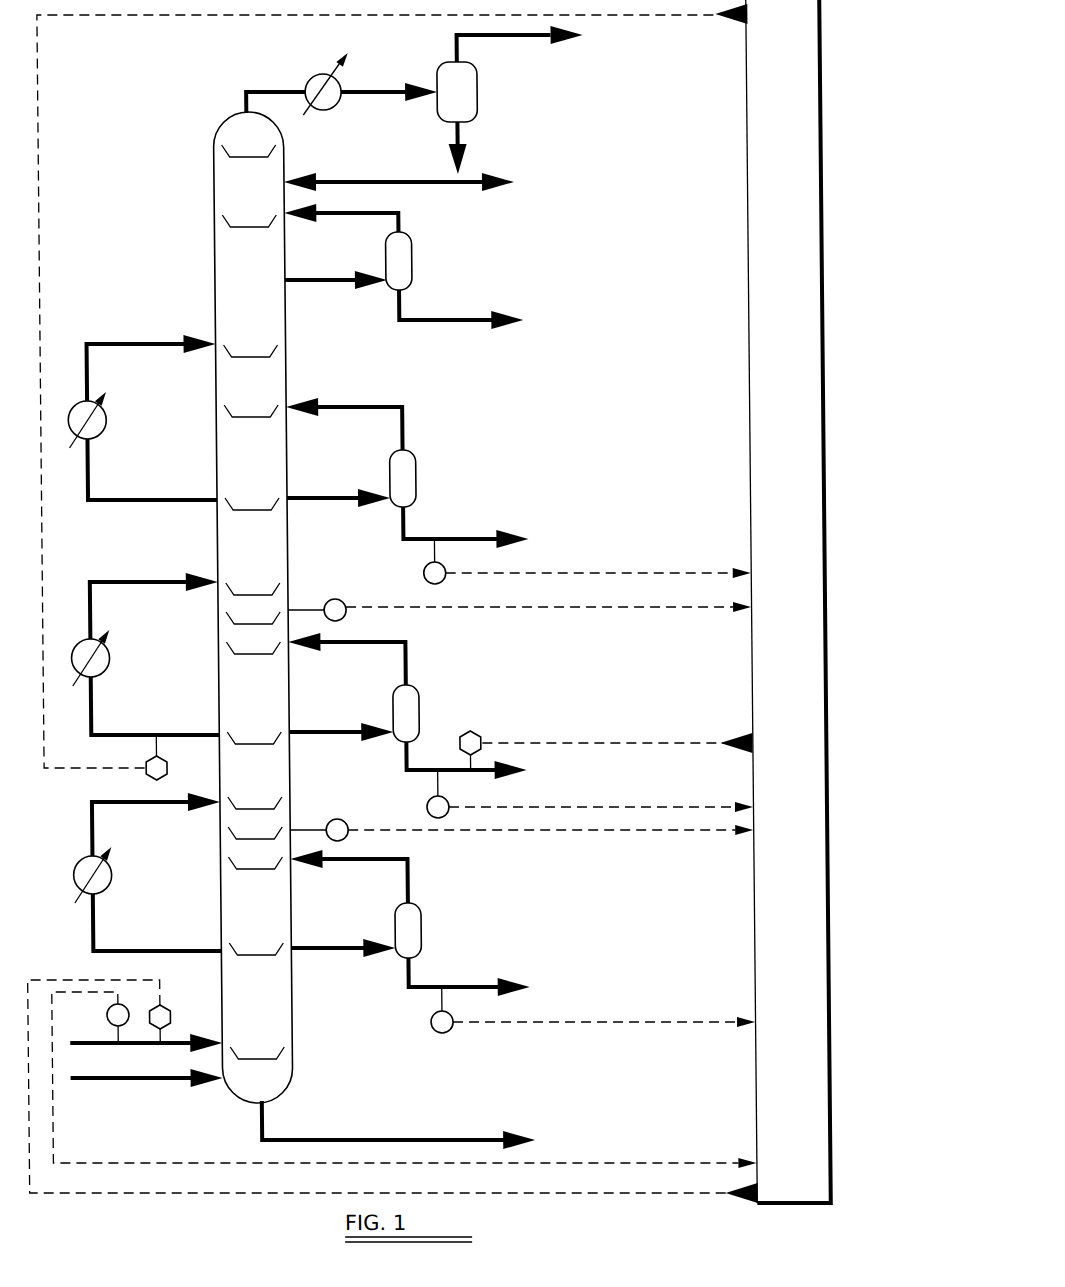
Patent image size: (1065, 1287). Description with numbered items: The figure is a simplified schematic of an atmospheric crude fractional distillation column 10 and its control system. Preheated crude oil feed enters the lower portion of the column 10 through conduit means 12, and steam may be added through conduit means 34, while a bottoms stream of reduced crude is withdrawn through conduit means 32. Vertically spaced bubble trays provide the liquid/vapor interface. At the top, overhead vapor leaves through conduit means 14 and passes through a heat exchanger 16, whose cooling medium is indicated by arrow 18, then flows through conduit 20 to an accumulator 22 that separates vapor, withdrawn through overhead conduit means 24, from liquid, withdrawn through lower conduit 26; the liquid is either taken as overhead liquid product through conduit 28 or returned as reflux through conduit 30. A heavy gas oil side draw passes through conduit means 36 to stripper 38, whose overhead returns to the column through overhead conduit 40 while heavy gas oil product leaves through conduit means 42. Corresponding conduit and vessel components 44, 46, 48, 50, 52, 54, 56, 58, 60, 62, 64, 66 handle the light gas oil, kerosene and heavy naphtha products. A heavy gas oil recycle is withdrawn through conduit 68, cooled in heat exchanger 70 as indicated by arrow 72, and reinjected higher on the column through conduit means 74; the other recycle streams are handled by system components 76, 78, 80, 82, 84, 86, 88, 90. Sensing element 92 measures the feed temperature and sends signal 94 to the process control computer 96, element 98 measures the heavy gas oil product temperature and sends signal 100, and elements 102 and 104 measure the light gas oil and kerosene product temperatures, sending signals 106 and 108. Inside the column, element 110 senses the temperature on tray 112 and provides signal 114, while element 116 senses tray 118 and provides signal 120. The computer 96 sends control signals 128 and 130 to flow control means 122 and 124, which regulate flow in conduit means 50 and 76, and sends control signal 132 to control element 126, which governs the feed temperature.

The fractional distillation column 10 is at (180, 216).
The conduit means 12 is at (174, 1040).
The conduit means 14 is at (251, 90).
The heat exchanger 16 is at (310, 82).
The arrow 18 is at (345, 60).
The conduit 20 is at (378, 90).
The accumulator 22 is at (483, 80).
The overhead conduit means 24 is at (532, 40).
The lower conduit 26 is at (466, 130).
The conduit 28 is at (458, 182).
The conduit 30 is at (338, 182).
The conduit means 32 is at (296, 1140).
The conduit means 34 is at (163, 1081).
The conduit means 36 is at (308, 955).
The stripper 38 is at (420, 912).
The overhead conduit 40 is at (384, 860).
The conduit means 42 is at (462, 987).
The conduit 44 is at (318, 732).
The stripper 46 is at (418, 696).
The overhead conduit 48 is at (412, 640).
The conduit means 50 is at (421, 770).
The conduit 52 is at (303, 497).
The stripper 54 is at (418, 466).
The overhead conduit 56 is at (378, 406).
The conduit means 58 is at (449, 539).
The conduit 60 is at (312, 280).
The stripper 62 is at (416, 266).
The overhead conduit 64 is at (404, 215).
The conduit means 66 is at (473, 320).
The conduit 68 is at (131, 950).
The heat exchanger 70 is at (77, 866).
The arrow 72 is at (115, 852).
The conduit means 74 is at (113, 802).
The conduit means 76 is at (117, 735).
The heat exchanger 78 is at (109, 658).
The arrow 80 is at (112, 630).
The conduit means 82 is at (168, 582).
The conduit 84 is at (121, 500).
The heat exchanger 86 is at (108, 420).
The arrow 88 is at (110, 392).
The conduit means 90 is at (148, 343).
The temperature sensing means 92 is at (103, 1015).
The electrical signal 94 is at (78, 1167).
The process control computer 96 is at (800, 372).
The temperature sensing means 98 is at (428, 1026).
The electrical signal 100 is at (709, 1023).
The temperature sensing means 102 is at (425, 805).
The temperature sensing means 104 is at (444, 582).
The electrical signal 106 is at (603, 808).
The electrical signal 108 is at (645, 573).
The temperature sensing element 110 is at (332, 818).
The tray 112 is at (248, 836).
The signal 114 is at (575, 830).
The temperature sensing element 116 is at (335, 599).
The tray 118 is at (250, 622).
The electrical signal 120 is at (573, 607).
The flow control means 122 is at (477, 735).
The flow control means 124 is at (143, 765).
The control element 126 is at (156, 1005).
The control signal 128 is at (596, 742).
The control signal 130 is at (42, 93).
The control signal 132 is at (597, 1193).